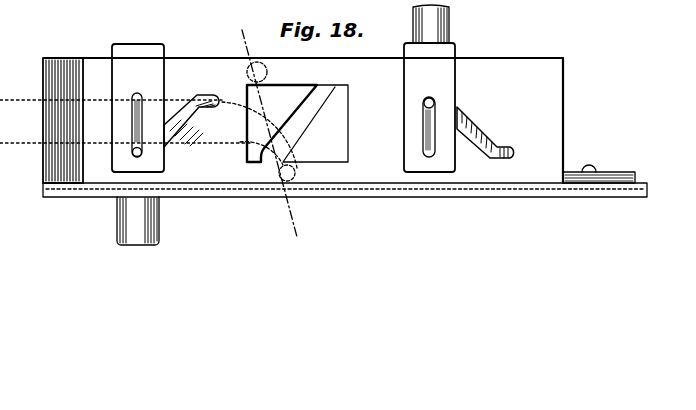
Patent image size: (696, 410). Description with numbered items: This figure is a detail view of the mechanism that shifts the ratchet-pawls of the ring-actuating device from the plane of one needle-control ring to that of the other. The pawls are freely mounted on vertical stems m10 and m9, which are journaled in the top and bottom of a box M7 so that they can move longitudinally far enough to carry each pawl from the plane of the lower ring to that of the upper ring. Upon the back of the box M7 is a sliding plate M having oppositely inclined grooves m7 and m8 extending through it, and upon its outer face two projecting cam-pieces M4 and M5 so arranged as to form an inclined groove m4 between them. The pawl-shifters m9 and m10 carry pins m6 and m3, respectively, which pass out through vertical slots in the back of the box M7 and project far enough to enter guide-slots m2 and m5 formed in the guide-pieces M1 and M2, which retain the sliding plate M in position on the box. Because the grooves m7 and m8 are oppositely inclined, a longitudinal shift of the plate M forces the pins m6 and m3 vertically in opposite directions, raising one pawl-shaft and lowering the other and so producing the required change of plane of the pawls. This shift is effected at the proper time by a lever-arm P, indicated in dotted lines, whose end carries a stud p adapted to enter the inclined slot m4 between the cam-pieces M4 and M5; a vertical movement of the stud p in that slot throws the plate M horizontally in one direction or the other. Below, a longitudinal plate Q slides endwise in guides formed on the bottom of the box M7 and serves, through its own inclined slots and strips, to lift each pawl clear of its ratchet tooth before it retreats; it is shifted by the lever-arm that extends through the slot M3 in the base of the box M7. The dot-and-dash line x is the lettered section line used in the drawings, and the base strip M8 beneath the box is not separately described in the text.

The sliding plate M is at (94, 60).
The guide-piece M1 is at (138, 57).
The guide-piece M2 is at (418, 70).
The slot in base of box M3 is at (610, 177).
The cam-piece M4 is at (282, 123).
The cam-piece M5 is at (297, 123).
The box M7 is at (52, 84).
The base plate M8 is at (361, 188).
The guide-slot m2 is at (137, 96).
The pin m3 is at (430, 100).
The inclined slot m4 is at (323, 89).
The guide-slot m5 is at (423, 138).
The pin m6 is at (133, 153).
The inclined groove m7 is at (184, 99).
The inclined groove m8 is at (486, 139).
The pawl-shaft m9 is at (133, 223).
The pawl-shaft m10 is at (437, 20).
The lever-arm P is at (213, 132).
The stud p is at (295, 174).
The longitudinal plate Q is at (427, 193).
The section line x is at (301, 119).